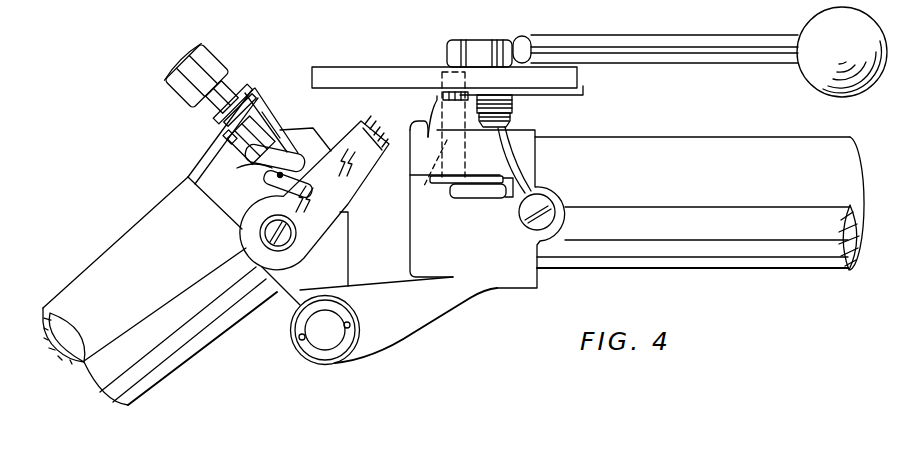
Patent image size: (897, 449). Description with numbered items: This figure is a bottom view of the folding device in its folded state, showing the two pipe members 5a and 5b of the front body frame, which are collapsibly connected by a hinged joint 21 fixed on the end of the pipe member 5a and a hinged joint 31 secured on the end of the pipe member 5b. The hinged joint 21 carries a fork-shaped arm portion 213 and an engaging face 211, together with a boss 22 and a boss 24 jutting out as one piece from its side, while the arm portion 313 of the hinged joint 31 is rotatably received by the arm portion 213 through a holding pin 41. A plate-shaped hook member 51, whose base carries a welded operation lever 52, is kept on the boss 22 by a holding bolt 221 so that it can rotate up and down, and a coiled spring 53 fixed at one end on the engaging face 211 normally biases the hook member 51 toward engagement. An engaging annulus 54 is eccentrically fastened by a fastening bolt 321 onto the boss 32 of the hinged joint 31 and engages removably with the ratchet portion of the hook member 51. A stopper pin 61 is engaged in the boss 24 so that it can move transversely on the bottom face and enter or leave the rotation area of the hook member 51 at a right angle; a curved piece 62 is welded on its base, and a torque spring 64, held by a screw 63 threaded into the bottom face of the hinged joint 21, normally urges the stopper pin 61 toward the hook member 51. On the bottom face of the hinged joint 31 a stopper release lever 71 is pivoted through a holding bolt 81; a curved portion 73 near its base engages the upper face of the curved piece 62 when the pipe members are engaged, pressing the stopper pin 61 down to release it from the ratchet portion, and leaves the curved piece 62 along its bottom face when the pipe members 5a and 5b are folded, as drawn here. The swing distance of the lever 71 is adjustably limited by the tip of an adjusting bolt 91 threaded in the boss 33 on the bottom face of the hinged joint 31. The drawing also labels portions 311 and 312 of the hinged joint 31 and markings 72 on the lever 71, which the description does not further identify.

The pipe member 5a is at (703, 245).
The pipe member 5b is at (113, 266).
The hinged joint 21 is at (508, 292).
The engaging face 211 is at (408, 216).
The arm portion 213 is at (385, 340).
The boss 22 is at (514, 106).
The holding bolt 221 is at (478, 62).
The boss 24 is at (433, 108).
The hinged joint 31 is at (187, 172).
The plate portion of arm 311 is at (249, 117).
The block of arm 312 is at (300, 138).
The arm portion 313 is at (346, 273).
The boss 32 is at (247, 95).
The fastening bolt 321 is at (192, 62).
The boss 33 is at (258, 172).
The holding pin 41 is at (318, 338).
The hook member 51 is at (342, 76).
The operation lever 52 is at (699, 45).
The coiled spring 53 is at (512, 119).
The engaging annulus 54 is at (223, 78).
The stopper pin 61 is at (430, 176).
The curved piece 62 is at (493, 181).
The screw 63 is at (532, 223).
The torque spring 64 is at (526, 166).
The stopper release lever 71 is at (318, 222).
The spring marks 72 is at (302, 191).
The curved portion 73 is at (375, 120).
The holding bolt 81 is at (266, 232).
The adjusting bolt 91 is at (228, 136).